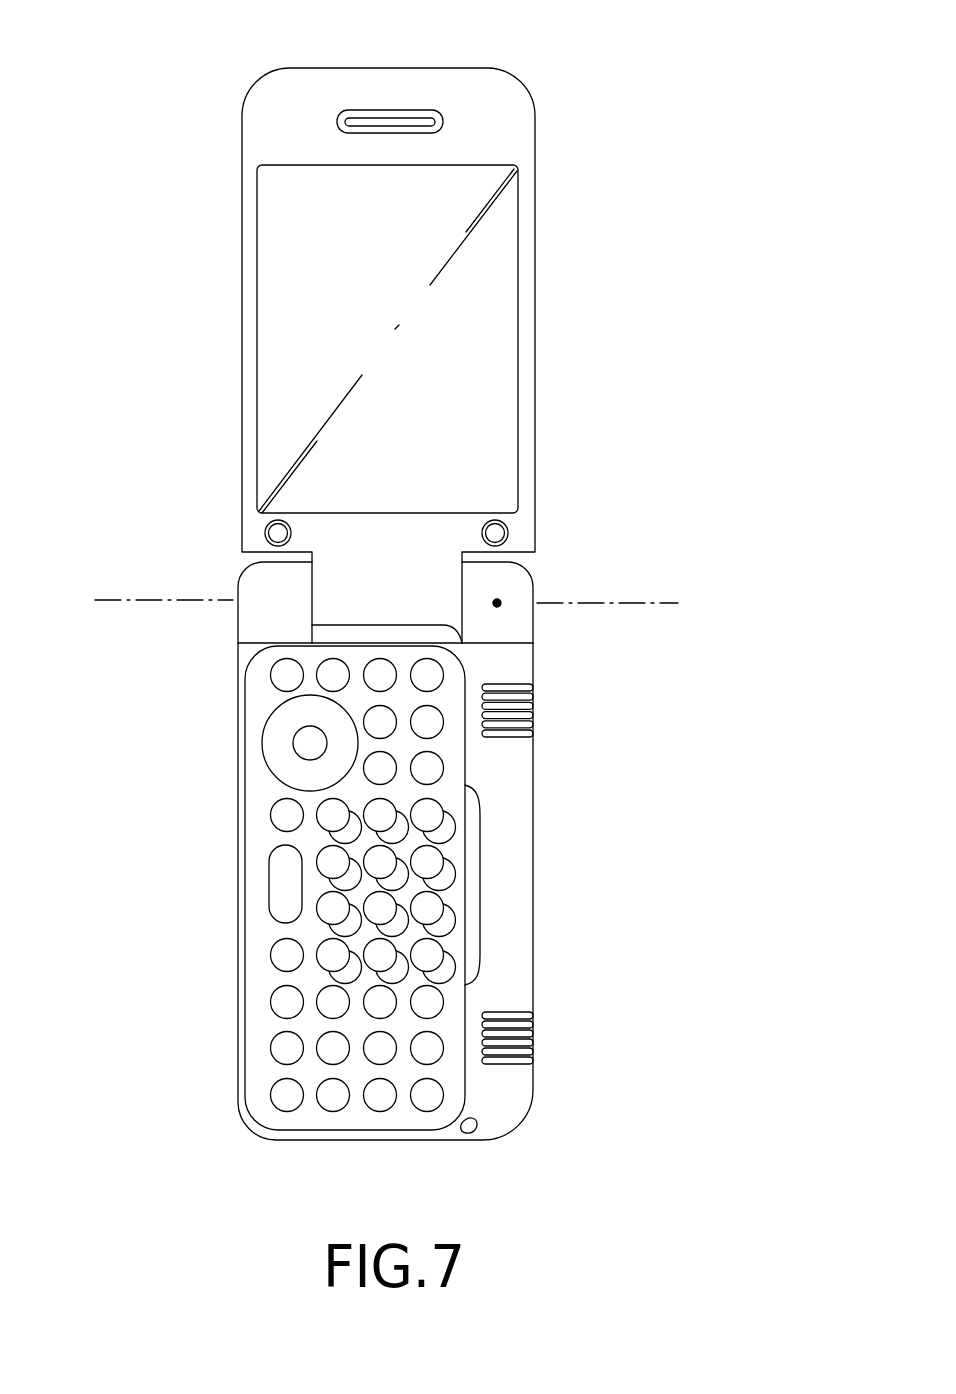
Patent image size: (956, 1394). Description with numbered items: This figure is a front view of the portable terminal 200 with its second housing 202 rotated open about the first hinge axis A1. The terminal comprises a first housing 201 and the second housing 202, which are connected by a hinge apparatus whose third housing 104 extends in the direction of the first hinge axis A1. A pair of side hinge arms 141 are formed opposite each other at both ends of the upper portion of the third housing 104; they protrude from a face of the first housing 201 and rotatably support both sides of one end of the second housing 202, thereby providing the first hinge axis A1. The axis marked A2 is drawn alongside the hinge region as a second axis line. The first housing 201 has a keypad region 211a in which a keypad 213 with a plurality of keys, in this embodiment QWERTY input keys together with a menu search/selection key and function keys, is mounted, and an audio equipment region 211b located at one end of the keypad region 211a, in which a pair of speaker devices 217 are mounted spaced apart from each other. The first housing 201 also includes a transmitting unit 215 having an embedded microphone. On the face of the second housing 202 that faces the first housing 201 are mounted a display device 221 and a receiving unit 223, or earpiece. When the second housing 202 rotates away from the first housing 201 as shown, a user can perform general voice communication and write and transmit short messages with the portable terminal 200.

The portable terminal 200 is at (129, 133).
The second housing 202 is at (552, 228).
The receiving unit 223 is at (386, 120).
The display device 221 is at (502, 347).
The side hinge arms 141 is at (263, 625).
The third housing 104 is at (207, 549).
The first hinge axis A1 is at (122, 600).
The second hinge axis A2 is at (497, 603).
The first housing 201 is at (207, 1046).
The keypad region 211a is at (445, 1148).
The audio equipment region 211b is at (528, 1148).
The keypad 213 is at (287, 955).
The speaker devices 217 is at (528, 717).
The transmitting unit 215 is at (472, 1120).